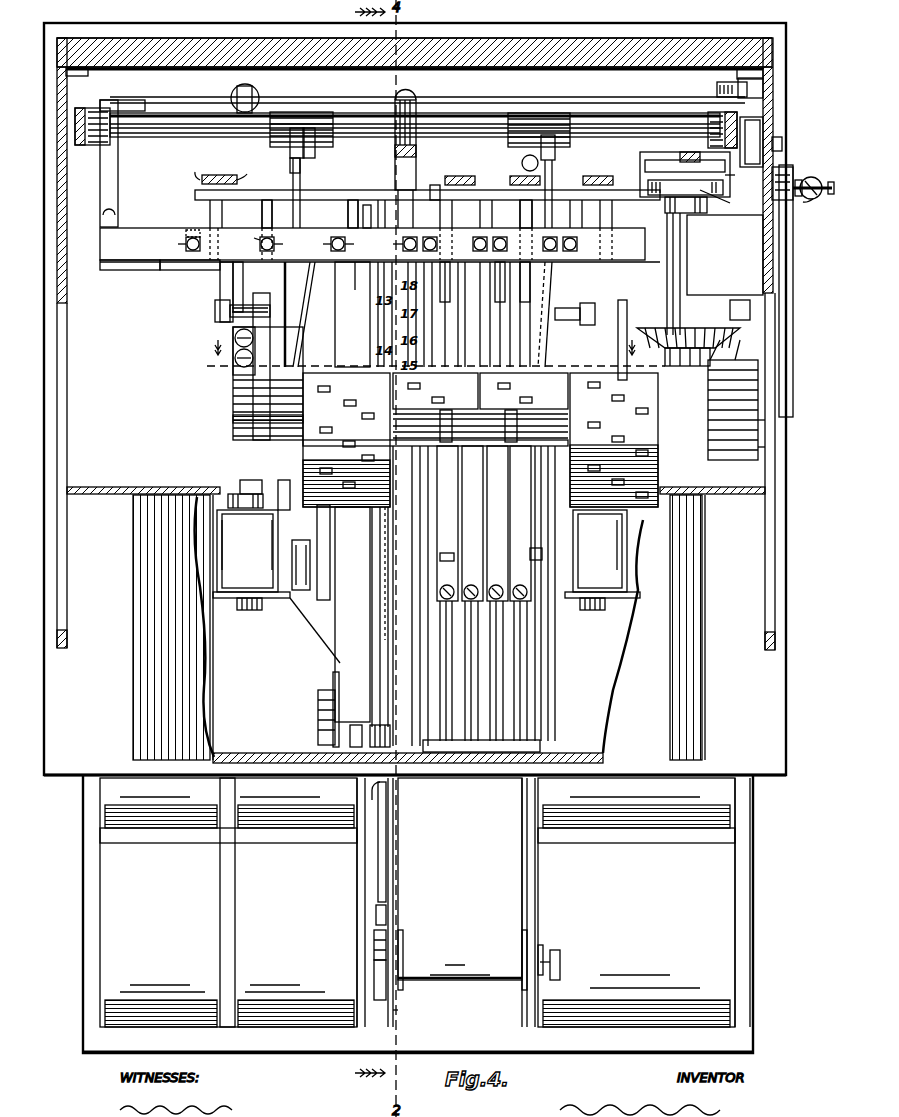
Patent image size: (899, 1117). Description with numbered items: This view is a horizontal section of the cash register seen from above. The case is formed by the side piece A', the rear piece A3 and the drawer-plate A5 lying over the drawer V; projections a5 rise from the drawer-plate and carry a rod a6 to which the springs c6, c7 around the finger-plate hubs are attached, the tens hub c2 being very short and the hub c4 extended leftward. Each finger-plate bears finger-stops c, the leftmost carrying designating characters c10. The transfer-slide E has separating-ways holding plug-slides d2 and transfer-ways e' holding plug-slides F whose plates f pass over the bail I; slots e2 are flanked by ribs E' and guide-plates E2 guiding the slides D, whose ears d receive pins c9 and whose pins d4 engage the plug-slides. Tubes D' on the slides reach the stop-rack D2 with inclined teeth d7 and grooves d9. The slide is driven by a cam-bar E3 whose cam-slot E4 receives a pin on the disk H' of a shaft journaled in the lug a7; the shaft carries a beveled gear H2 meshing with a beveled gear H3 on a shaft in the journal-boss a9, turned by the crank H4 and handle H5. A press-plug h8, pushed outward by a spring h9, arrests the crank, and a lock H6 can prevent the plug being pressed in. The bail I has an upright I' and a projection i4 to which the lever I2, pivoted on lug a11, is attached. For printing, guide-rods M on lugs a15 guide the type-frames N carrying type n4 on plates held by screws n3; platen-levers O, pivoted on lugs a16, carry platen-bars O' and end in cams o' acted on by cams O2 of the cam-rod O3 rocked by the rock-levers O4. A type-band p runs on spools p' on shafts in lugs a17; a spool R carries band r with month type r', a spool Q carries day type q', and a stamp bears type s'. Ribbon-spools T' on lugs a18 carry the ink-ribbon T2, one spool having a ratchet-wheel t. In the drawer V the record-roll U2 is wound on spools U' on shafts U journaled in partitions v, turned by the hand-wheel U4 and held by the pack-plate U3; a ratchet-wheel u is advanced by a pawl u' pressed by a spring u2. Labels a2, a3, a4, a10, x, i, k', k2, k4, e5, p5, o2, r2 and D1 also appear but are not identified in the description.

The side piece A' is at (416, 344).
The rear piece A3 is at (712, 40).
The top bar a4 is at (515, 52).
The lever I2 is at (615, 97).
The cam-rod O3 is at (625, 120).
The rock-levers O4 is at (82, 110).
The cam-slot E4 is at (122, 163).
The wheel x is at (255, 90).
The cams O2 is at (303, 125).
The projection i4 is at (413, 122).
The bracket i is at (717, 88).
The lug a11 is at (760, 90).
The lock H6 is at (751, 142).
The crank H4 is at (793, 343).
The press-plug h8 is at (782, 170).
The crank wheel k4 is at (815, 178).
The handle H5 is at (812, 207).
The cam-bar E3 is at (645, 195).
The disk H' is at (721, 200).
The spring h9 is at (735, 175).
The lug a7 is at (715, 274).
The casing side a3 is at (419, 512).
The drawer-plate A5 is at (735, 627).
The tubes D' is at (422, 209).
The stop-rack D2 is at (222, 175).
The slides D is at (380, 223).
The rack-teeth d7 is at (377, 172).
The grooves d9 is at (431, 227).
The platen-levers O is at (423, 260).
The bail I is at (368, 196).
The upright portion I' is at (385, 193).
The plates f is at (393, 214).
The spool R is at (308, 685).
The spool Q is at (342, 750).
The transfer-slide E is at (399, 244).
The slot e2 is at (378, 241).
The bearing e5 is at (253, 237).
The transfer-ways e' is at (321, 244).
The plug-slides F is at (421, 228).
The plug-slides d2 is at (187, 240).
The ribs E' is at (370, 269).
The guide-plates E2 is at (170, 270).
The pins d4 is at (220, 275).
The ears d is at (233, 288).
The pins c9 is at (412, 307).
The hub c2 is at (270, 340).
The projections a5 is at (235, 400).
The hub c4 is at (235, 420).
The rod a6 is at (255, 442).
The band r is at (351, 314).
The type r' is at (352, 456).
The type-band p is at (454, 314).
The designating characters c10 is at (370, 400).
The finger-stop c is at (668, 415).
The spring c7 is at (448, 412).
The spring c6 is at (480, 415).
The type-frames N is at (484, 523).
The screws n3 is at (527, 592).
The type n4 is at (447, 556).
The cams o' is at (541, 555).
The guide-rods M is at (527, 700).
The lugs a15 is at (540, 746).
The spools p' is at (400, 594).
The type q' is at (405, 573).
The platen-bars O' is at (338, 613).
The type s' is at (321, 562).
The ink-ribbon T2 is at (422, 551).
The ribbon-spools T' is at (426, 610).
The lugs a18 is at (250, 610).
The lugs a17 is at (335, 747).
The space p5 is at (594, 640).
The shelf a2 is at (120, 487).
The ratchet-wheel t is at (233, 494).
The block a10 is at (256, 486).
The post k' is at (513, 490).
The beveled gear H2 is at (690, 366).
The beveled gear H3 is at (730, 445).
The block k2 is at (730, 310).
The journal-boss a9 is at (765, 420).
The lugs a16 is at (765, 447).
The pin o2 is at (312, 162).
The pin r2 is at (432, 178).
The disc D1 is at (524, 162).
The drawer V is at (418, 914).
The record-roll U2 is at (464, 902).
The spools U' is at (478, 959).
The shafts U is at (547, 953).
The hand-wheel U4 is at (560, 958).
The pack-plate U3 is at (378, 850).
The spring u2 is at (376, 900).
The pawl u' is at (358, 946).
The ratchet-wheel u is at (377, 990).
The partitions v is at (548, 897).